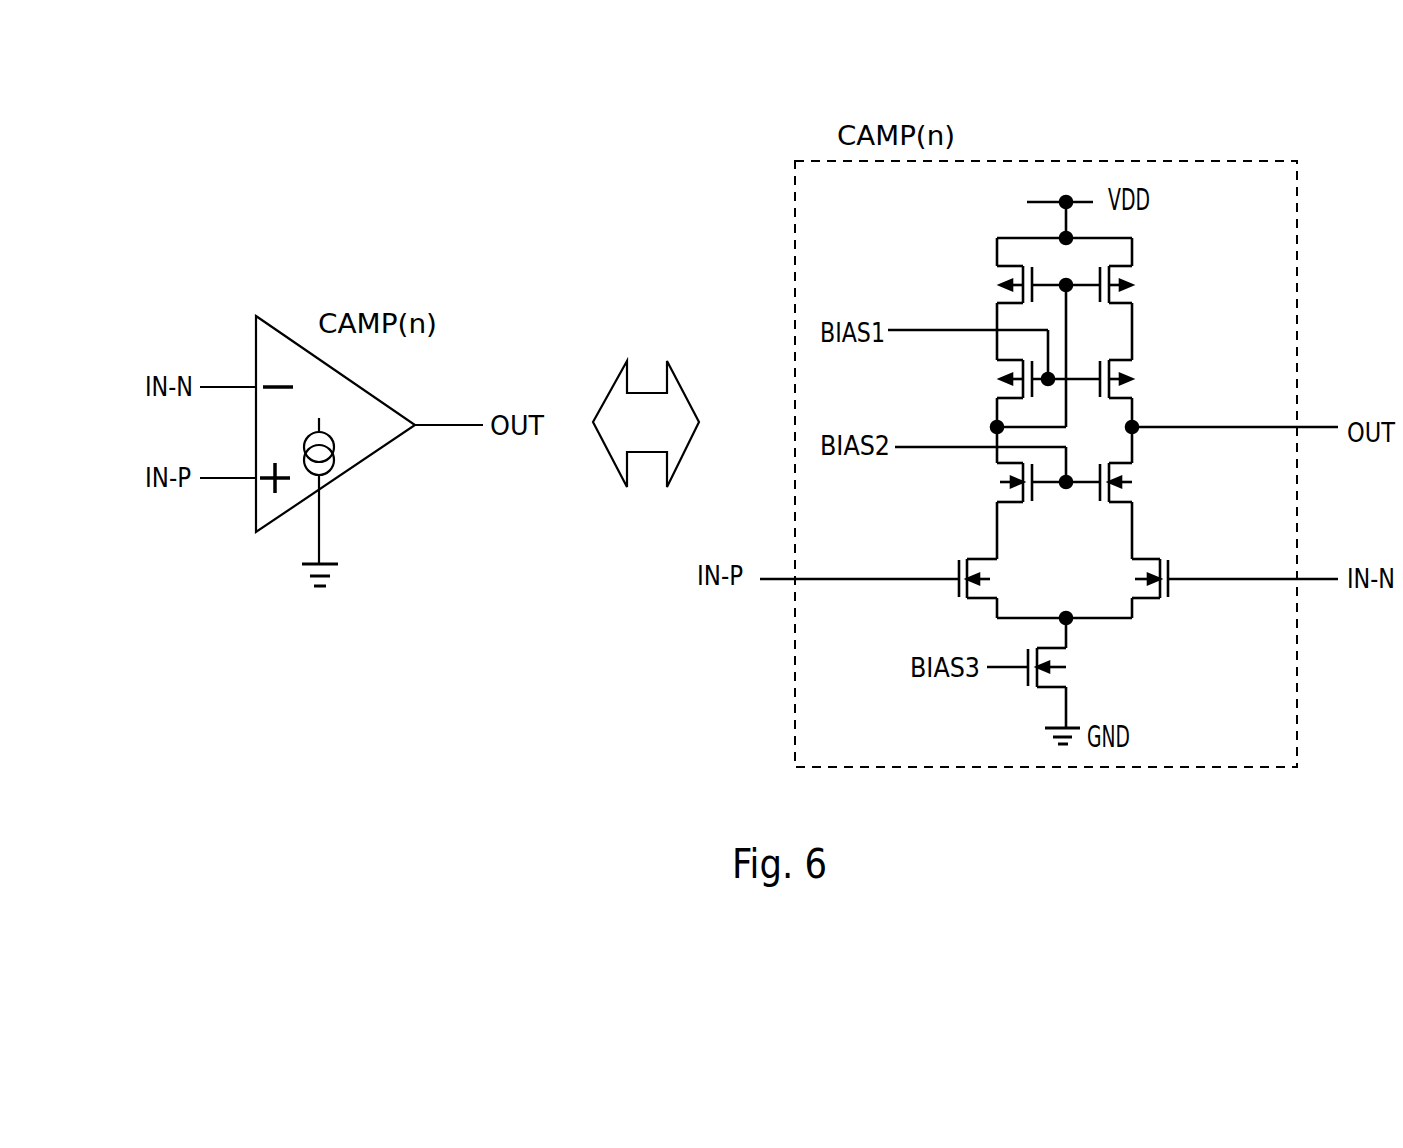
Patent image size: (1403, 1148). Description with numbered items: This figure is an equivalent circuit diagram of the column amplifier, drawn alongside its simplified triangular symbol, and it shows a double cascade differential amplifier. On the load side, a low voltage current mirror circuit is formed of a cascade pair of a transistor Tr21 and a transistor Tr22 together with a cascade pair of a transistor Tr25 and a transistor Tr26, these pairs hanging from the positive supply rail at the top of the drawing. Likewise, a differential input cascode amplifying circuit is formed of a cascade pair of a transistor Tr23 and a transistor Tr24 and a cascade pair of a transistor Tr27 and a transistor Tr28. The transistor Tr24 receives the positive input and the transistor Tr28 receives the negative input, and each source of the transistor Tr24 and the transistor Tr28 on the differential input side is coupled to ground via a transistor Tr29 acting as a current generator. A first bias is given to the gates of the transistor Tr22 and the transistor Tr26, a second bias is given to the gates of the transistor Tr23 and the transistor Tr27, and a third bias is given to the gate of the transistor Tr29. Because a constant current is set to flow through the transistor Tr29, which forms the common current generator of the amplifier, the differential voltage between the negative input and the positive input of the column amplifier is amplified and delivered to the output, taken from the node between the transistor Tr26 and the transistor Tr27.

The transistor Tr21 is at (999, 284).
The transistor Tr22 is at (996, 380).
The transistor Tr23 is at (999, 482).
The transistor Tr24 is at (944, 567).
The transistor Tr25 is at (1129, 284).
The transistor Tr26 is at (1129, 380).
The transistor Tr27 is at (1129, 482).
The transistor Tr28 is at (1181, 563).
The transistor Tr29 is at (1076, 667).